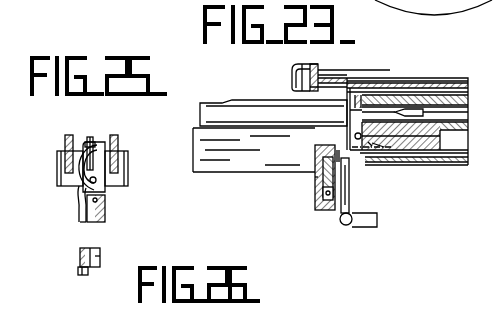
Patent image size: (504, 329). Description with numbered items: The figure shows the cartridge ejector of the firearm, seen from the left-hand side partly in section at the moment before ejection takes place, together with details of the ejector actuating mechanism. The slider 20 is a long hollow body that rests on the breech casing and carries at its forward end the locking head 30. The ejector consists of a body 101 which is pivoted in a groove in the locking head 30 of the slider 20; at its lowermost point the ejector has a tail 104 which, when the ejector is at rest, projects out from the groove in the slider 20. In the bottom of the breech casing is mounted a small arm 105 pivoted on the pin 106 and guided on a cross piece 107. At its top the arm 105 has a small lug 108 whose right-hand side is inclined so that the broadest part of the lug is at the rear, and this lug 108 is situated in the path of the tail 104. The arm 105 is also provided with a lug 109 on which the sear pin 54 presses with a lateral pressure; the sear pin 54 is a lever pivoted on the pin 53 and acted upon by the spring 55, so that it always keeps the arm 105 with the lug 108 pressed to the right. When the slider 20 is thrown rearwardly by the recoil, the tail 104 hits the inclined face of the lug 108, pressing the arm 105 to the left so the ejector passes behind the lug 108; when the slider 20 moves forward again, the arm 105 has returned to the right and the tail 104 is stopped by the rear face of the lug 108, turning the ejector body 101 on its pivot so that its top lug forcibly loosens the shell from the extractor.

In FIG. 23, the slider 20 is at (446, 95).
In FIG. 23, the locking head 30 is at (366, 100).
In FIG. 25, the pin 53 is at (101, 201).
In FIG. 23, the sear pin 54 is at (350, 194).
In FIG. 25, the sear pin 54 is at (80, 178).
In FIG. 26, the sear pin 54 is at (82, 273).
In FIG. 25, the spring 55 is at (80, 222).
In FIG. 23, the ejector body 101 is at (384, 147).
In FIG. 23, the tail 104 is at (372, 146).
In FIG. 23, the arm 105 is at (315, 151).
In FIG. 25, the arm 105 is at (100, 166).
In FIG. 26, the arm 105 is at (95, 255).
In FIG. 23, the pin 106 is at (330, 202).
In FIG. 25, the pin 106 is at (97, 181).
In FIG. 23, the cross piece 107 is at (316, 177).
In FIG. 25, the cross piece 107 is at (78, 153).
In FIG. 23, the lug 108 is at (322, 146).
In FIG. 25, the lug 108 is at (90, 137).
In FIG. 26, the lug 108 is at (100, 256).
In FIG. 23, the lug 109 is at (339, 150).
In FIG. 25, the lug 109 is at (97, 150).
In FIG. 26, the lug 109 is at (90, 272).